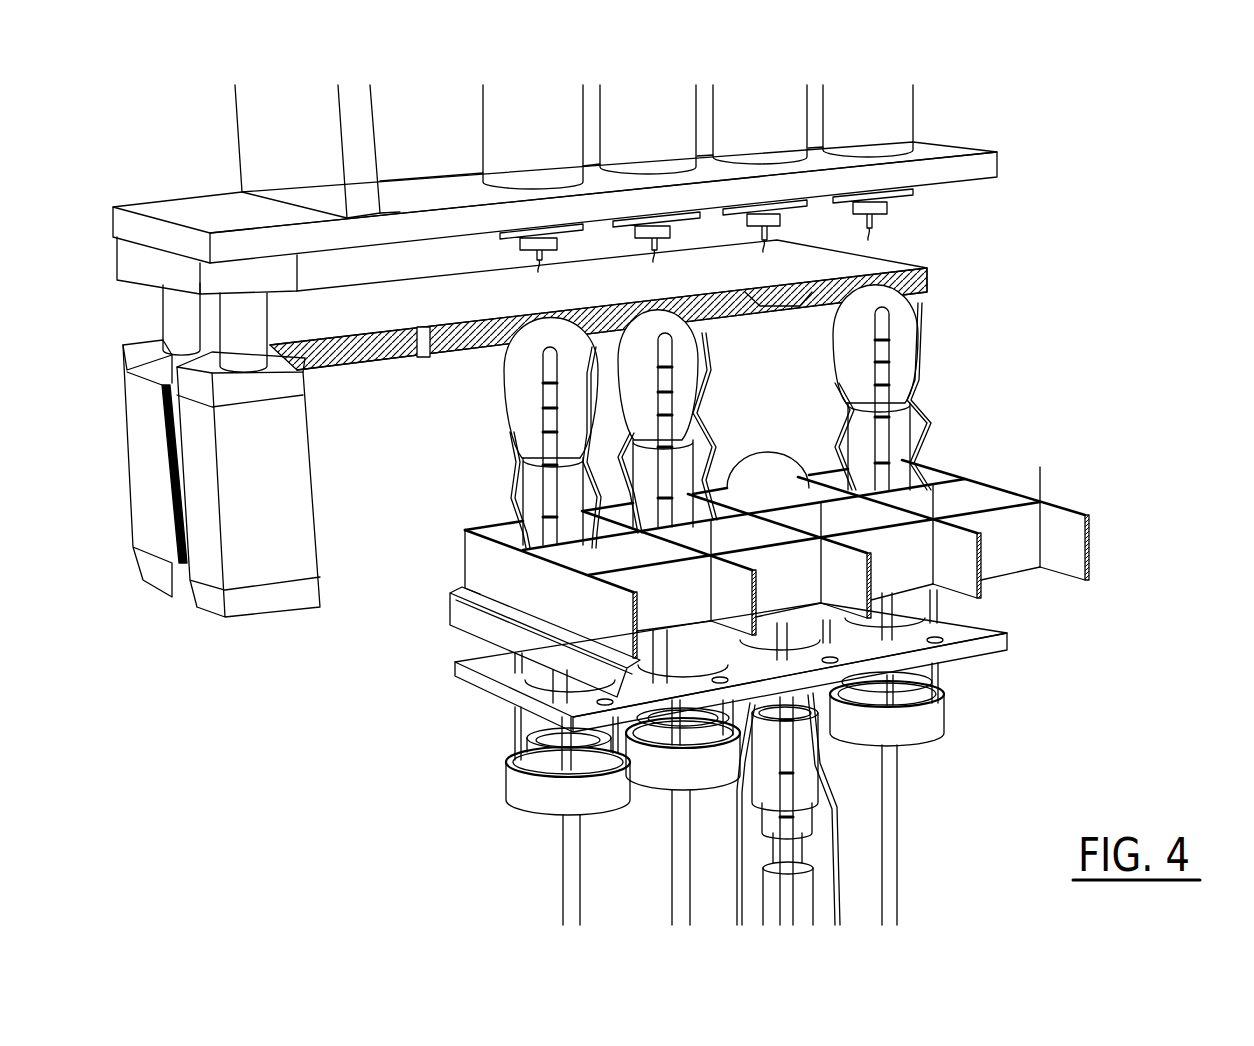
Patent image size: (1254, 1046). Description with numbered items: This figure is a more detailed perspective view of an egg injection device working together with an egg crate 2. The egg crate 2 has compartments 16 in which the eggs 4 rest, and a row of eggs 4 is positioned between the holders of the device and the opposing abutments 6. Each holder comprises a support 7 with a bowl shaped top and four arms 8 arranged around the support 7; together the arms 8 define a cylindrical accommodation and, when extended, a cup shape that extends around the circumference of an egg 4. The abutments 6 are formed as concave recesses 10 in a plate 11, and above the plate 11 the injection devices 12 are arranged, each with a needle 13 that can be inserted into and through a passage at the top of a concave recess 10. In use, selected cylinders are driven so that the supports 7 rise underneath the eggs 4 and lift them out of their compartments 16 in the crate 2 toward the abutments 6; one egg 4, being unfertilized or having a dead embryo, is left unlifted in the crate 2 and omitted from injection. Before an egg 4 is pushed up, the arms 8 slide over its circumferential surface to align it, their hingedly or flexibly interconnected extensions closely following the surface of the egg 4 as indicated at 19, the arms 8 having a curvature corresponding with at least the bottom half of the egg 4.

The egg crate 2 is at (780, 678).
The egg 4 is at (515, 378).
The abutment 6 is at (771, 310).
The support 7 is at (537, 510).
The arm 8 is at (515, 462).
The concave recess 10 is at (786, 306).
The plate 11 is at (927, 283).
The injection device 12 is at (510, 148).
The needle 13 is at (538, 272).
The compartment 16 is at (928, 508).
The extensions following egg surface 19 is at (720, 410).